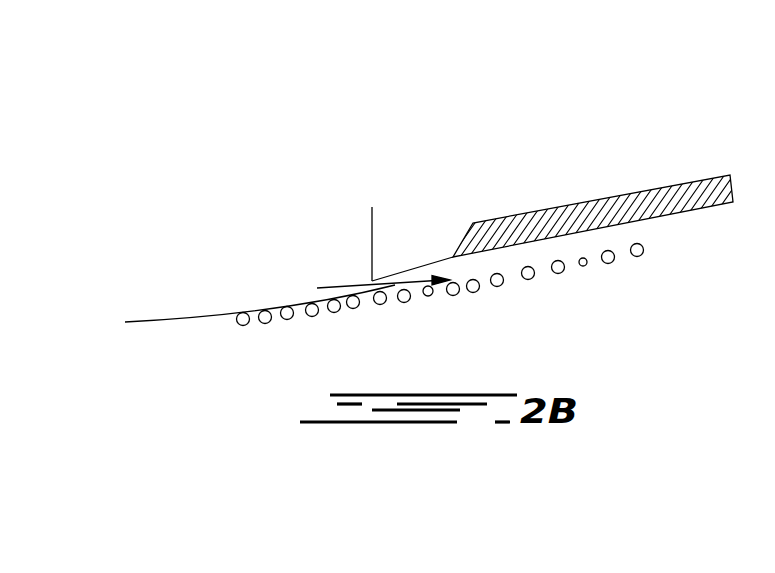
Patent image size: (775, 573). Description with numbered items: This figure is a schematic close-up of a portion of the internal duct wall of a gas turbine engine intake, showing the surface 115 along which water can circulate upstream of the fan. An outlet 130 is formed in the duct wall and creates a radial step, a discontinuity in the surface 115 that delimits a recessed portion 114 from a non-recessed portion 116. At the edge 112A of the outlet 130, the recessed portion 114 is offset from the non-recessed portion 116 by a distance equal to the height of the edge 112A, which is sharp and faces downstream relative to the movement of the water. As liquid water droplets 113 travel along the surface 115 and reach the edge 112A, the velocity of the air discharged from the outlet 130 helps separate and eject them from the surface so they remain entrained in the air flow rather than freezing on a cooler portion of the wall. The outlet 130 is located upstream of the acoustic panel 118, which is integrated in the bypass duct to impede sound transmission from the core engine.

The surface 115 is at (635, 70).
The non-recessed portion 116 is at (372, 202).
The recessed portion 114 is at (652, 150).
The acoustic panel 118 is at (708, 180).
The water droplets 113 is at (648, 267).
The edge 112A is at (380, 287).
The outlet 130 is at (360, 287).